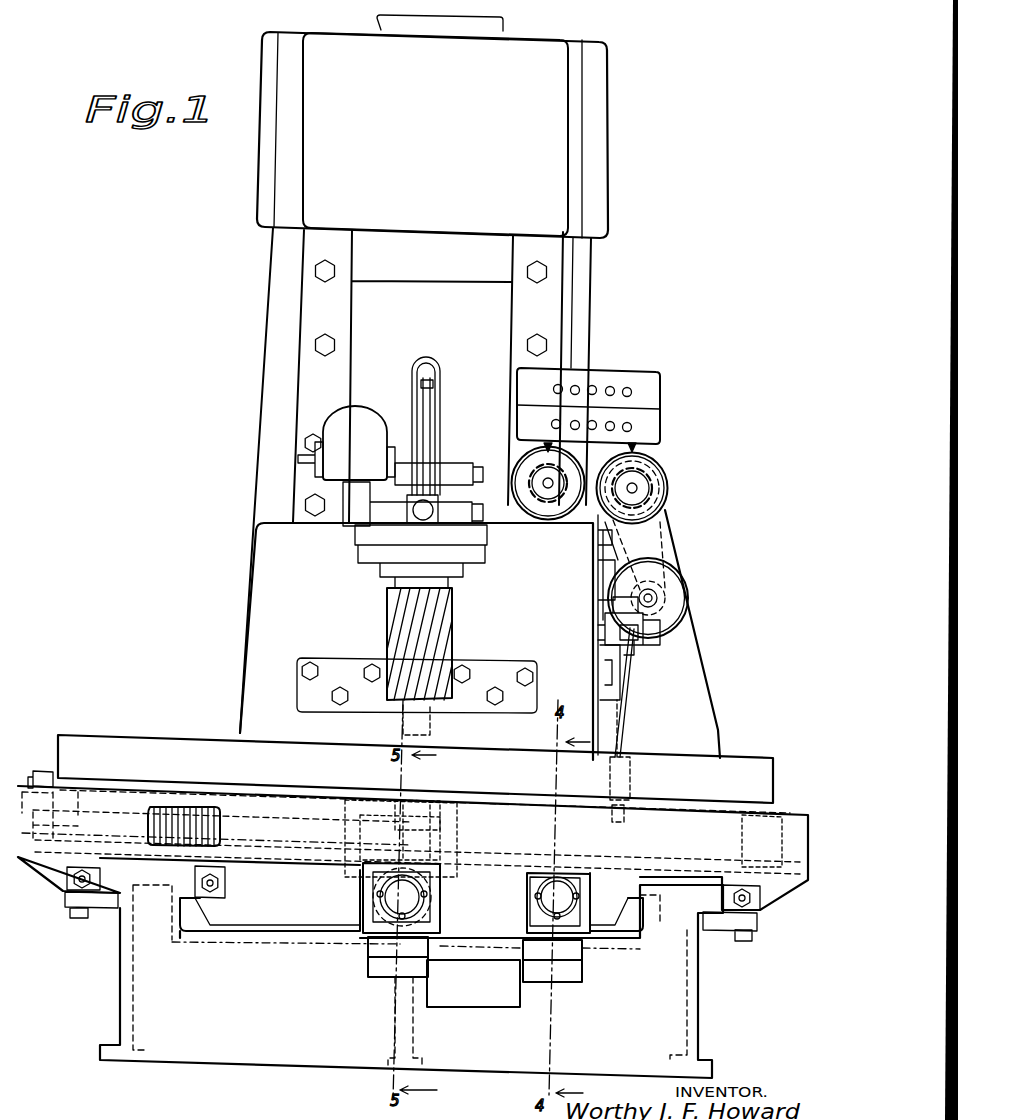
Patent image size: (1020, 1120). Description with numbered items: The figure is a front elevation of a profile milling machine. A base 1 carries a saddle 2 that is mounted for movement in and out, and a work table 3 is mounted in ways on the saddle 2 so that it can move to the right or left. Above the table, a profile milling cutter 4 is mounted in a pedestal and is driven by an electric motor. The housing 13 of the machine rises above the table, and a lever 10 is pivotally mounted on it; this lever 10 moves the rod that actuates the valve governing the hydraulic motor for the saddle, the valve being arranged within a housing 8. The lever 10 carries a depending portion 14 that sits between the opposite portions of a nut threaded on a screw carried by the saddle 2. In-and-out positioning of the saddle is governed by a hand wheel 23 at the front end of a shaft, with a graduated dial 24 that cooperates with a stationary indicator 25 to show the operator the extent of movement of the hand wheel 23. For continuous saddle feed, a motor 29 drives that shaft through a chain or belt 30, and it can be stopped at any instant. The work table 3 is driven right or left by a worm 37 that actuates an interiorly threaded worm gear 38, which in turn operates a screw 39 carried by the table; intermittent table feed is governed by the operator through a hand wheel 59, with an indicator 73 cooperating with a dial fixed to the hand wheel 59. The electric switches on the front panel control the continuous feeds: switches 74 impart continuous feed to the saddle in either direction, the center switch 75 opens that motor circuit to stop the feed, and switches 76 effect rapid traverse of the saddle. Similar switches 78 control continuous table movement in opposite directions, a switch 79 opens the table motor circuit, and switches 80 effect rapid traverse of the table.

The base 1 is at (124, 967).
The saddle 2 is at (50, 864).
The work table 3 is at (150, 748).
The profile milling cutter 4 is at (444, 643).
The housing 8 is at (662, 627).
The lever 10 is at (627, 707).
The housing 13 is at (247, 518).
The depending portion 14 is at (626, 802).
The hand wheel 23 is at (652, 486).
The graduated dial 24 is at (658, 506).
The stationary indicator 25 is at (665, 447).
The motor 29 is at (680, 596).
The chain or belt 30 is at (668, 536).
The worm 37 is at (372, 892).
The worm gear 38 is at (422, 797).
The screw 39 is at (192, 810).
The hand wheel 59 is at (557, 500).
The indicator 73 is at (544, 441).
The switches 74 is at (575, 385).
The center switch 75 is at (593, 385).
The switches 76 is at (556, 384).
The switches 78 is at (605, 431).
The switch 79 is at (606, 421).
The switches 80 is at (552, 423).